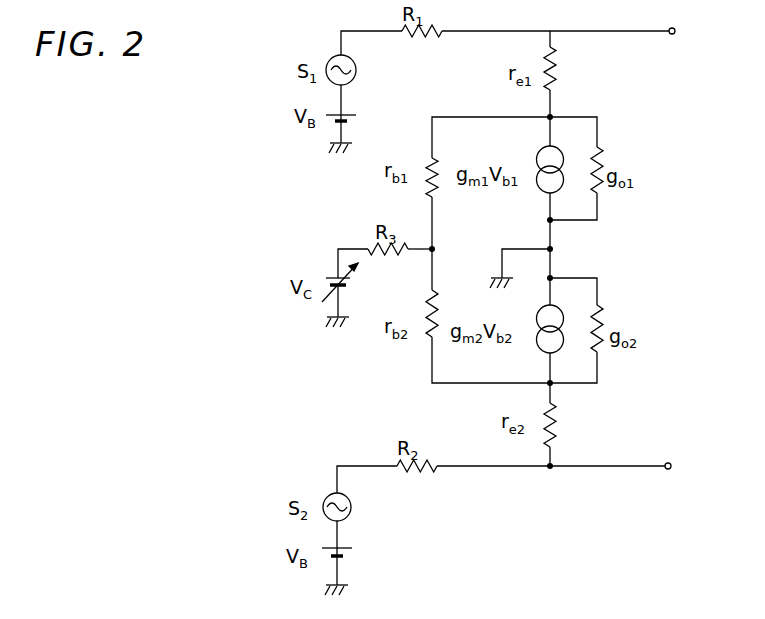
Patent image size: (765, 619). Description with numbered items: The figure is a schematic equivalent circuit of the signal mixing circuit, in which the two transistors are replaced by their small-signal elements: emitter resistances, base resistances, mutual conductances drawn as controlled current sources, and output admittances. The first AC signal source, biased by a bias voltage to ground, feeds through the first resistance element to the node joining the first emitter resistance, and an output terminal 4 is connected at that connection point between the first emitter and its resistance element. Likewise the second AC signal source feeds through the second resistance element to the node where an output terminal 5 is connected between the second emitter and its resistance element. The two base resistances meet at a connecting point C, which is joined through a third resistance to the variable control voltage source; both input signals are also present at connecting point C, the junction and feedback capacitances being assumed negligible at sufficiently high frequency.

The output terminal 4 is at (673, 34).
The output terminal 5 is at (669, 469).
The connecting point C is at (438, 249).